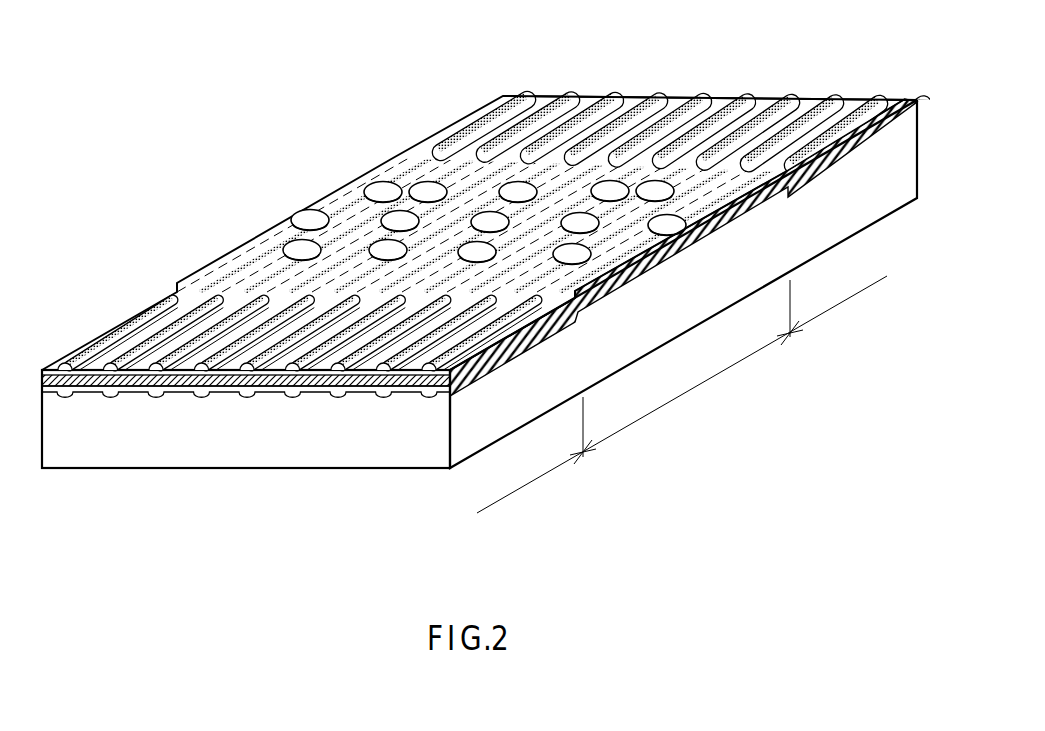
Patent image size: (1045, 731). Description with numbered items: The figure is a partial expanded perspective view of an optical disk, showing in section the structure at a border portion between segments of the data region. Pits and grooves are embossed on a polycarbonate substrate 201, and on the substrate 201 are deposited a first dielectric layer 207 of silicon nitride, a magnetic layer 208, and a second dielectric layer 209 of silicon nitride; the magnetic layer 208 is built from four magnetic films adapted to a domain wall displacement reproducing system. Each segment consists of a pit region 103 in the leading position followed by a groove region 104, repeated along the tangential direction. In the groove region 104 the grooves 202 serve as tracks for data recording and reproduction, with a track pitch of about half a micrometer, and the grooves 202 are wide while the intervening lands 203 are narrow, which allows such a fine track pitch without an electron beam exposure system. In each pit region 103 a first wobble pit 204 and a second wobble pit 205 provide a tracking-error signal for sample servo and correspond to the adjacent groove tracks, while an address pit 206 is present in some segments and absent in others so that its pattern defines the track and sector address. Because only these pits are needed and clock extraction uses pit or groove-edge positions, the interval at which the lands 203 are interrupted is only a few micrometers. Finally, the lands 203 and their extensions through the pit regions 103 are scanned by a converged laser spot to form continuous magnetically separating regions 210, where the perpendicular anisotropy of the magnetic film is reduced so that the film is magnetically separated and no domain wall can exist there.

The polycarbonate substrate 201 is at (215, 441).
The grooves 202 is at (170, 325).
The lands 203 is at (238, 330).
The first wobble pit 204 is at (387, 250).
The second wobble pit 205 is at (397, 220).
The address pit 206 is at (428, 190).
The first dielectric layer 207 is at (270, 390).
The magnetic layer 208 is at (313, 388).
The second dielectric layer 209 is at (358, 388).
The magnetically separating regions 210 is at (680, 188).
The pit region 103 is at (682, 394).
The groove region 104 is at (712, 397).